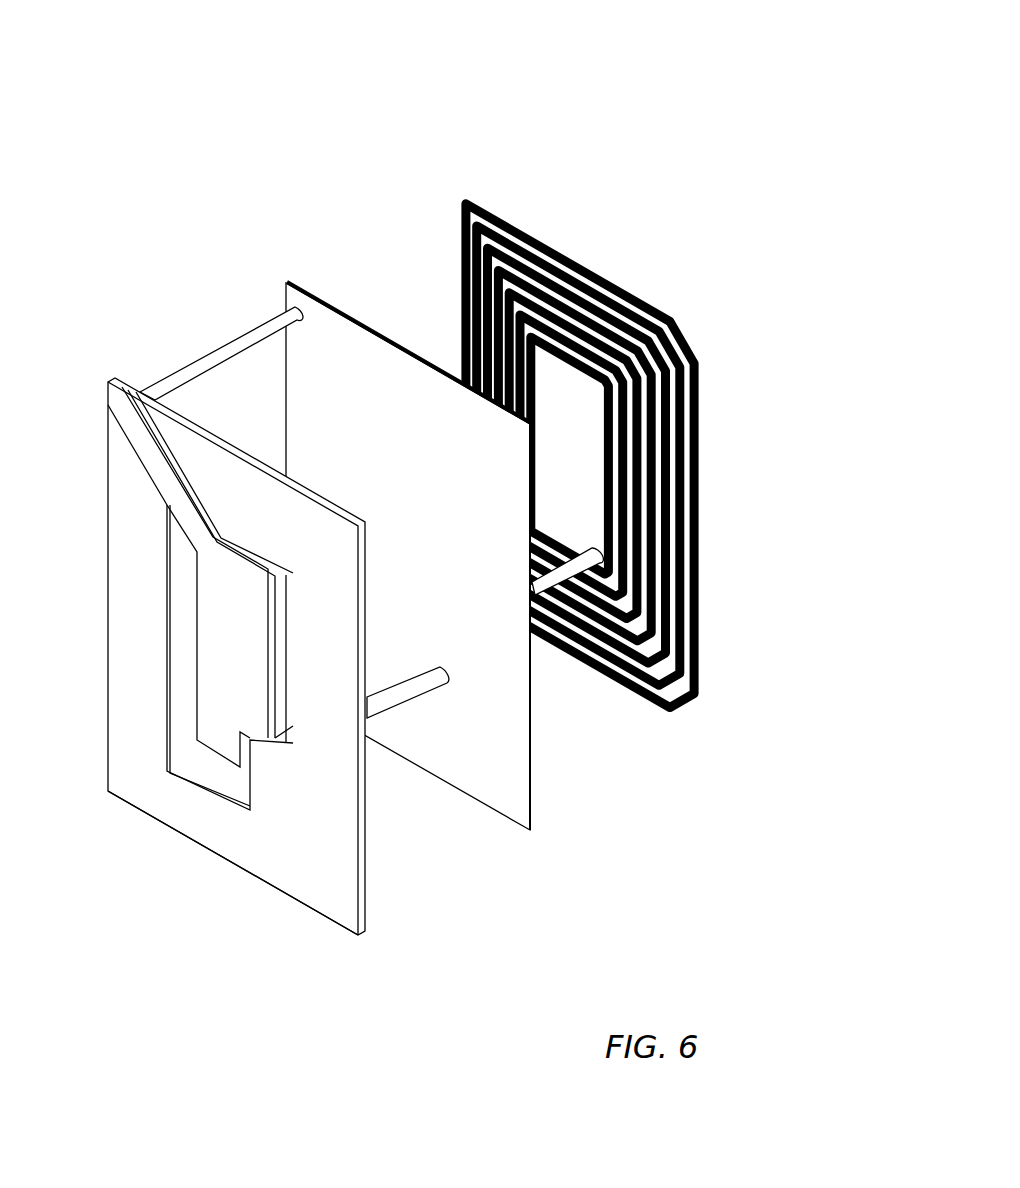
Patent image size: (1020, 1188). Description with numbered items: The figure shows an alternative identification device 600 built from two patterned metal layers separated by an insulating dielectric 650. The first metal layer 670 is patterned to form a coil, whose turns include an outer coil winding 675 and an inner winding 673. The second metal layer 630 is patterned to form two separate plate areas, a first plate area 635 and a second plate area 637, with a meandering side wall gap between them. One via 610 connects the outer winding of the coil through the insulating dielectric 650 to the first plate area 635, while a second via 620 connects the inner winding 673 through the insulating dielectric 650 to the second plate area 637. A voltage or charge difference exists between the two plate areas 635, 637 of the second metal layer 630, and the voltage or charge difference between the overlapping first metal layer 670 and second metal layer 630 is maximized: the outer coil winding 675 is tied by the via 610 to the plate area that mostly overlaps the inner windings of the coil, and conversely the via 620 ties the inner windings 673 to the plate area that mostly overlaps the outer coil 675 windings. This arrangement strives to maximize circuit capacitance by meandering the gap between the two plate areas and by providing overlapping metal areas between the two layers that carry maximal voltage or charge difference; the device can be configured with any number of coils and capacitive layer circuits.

The identification device 600 is at (255, 137).
The via 610 is at (400, 252).
The second via 620 is at (387, 700).
The second metal layer 630 is at (305, 690).
The first plate area 635 is at (198, 654).
The second plate area 637 is at (318, 918).
The insulating dielectric 650 is at (437, 633).
The first metal layer 670 is at (563, 504).
The inner winding 673 is at (607, 467).
The outer coil winding 675 is at (686, 456).